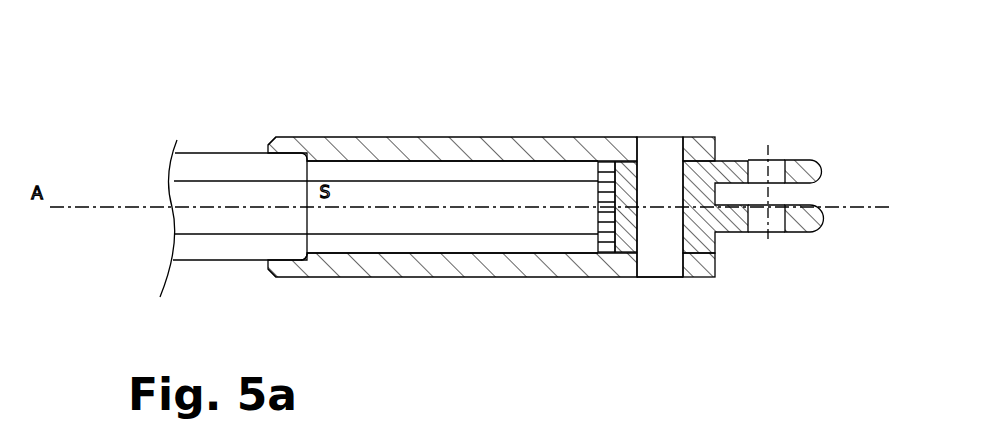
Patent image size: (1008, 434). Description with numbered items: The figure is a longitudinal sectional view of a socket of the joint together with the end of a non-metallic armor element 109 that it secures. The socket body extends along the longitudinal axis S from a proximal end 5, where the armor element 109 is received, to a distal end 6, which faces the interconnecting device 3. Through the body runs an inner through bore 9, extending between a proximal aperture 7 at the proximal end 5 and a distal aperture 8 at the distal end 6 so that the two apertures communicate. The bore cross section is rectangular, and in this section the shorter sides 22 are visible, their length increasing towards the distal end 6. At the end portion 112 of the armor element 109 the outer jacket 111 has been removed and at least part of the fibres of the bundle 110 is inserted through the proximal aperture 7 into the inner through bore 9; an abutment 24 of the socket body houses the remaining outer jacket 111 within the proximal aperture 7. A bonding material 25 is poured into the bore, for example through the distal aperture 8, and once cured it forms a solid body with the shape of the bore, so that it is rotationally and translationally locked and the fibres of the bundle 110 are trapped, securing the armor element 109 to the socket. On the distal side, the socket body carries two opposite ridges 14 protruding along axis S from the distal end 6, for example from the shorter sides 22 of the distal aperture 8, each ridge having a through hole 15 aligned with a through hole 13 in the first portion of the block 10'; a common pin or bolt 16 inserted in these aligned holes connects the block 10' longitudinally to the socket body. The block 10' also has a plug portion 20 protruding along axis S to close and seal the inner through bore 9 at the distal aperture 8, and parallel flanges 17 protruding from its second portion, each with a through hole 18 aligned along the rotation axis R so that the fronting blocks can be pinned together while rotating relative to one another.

The interconnecting device 3 is at (745, 137).
The proximal end 5 is at (317, 270).
The distal end 6 is at (700, 270).
The proximal aperture 7 is at (284, 150).
The distal aperture 8 is at (683, 258).
The inner through bore 9 is at (490, 253).
The block 10' is at (749, 134).
The through hole 13 is at (617, 250).
The ridges 14 is at (708, 267).
The through hole 15 is at (637, 273).
The common pin or bolt 16 is at (655, 162).
The flanges 17 is at (820, 205).
The through hole 18 is at (780, 222).
The plug portion 20 is at (627, 168).
The shorter sides 22 is at (357, 161).
The abutment 24 is at (300, 262).
The bonding material 25 is at (400, 170).
The armor element 109 is at (248, 126).
The bundle 110 is at (443, 195).
The outer jacket 111 is at (203, 160).
The end portion 112 is at (523, 195).